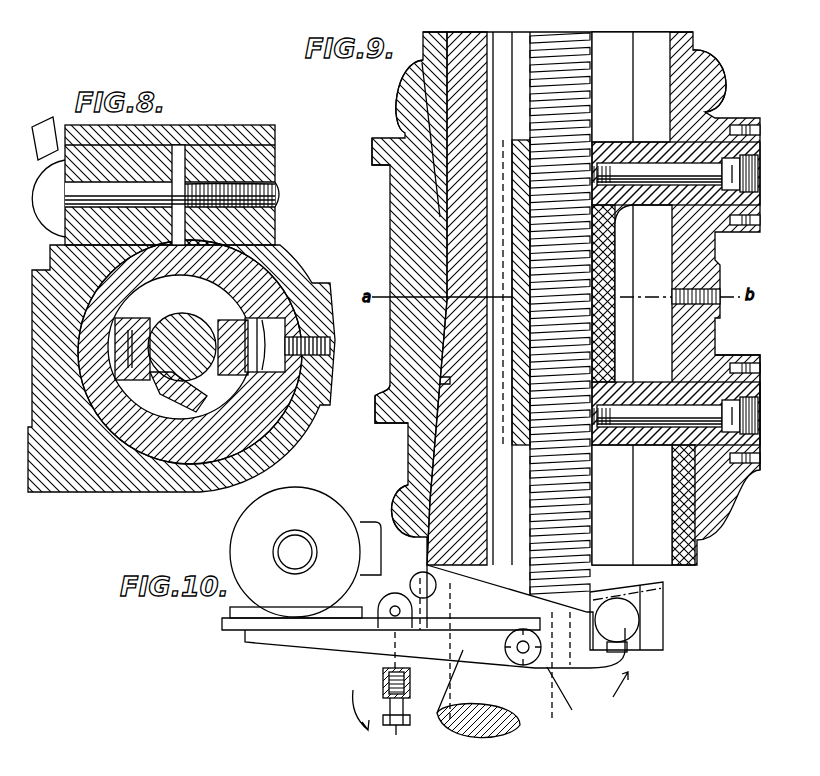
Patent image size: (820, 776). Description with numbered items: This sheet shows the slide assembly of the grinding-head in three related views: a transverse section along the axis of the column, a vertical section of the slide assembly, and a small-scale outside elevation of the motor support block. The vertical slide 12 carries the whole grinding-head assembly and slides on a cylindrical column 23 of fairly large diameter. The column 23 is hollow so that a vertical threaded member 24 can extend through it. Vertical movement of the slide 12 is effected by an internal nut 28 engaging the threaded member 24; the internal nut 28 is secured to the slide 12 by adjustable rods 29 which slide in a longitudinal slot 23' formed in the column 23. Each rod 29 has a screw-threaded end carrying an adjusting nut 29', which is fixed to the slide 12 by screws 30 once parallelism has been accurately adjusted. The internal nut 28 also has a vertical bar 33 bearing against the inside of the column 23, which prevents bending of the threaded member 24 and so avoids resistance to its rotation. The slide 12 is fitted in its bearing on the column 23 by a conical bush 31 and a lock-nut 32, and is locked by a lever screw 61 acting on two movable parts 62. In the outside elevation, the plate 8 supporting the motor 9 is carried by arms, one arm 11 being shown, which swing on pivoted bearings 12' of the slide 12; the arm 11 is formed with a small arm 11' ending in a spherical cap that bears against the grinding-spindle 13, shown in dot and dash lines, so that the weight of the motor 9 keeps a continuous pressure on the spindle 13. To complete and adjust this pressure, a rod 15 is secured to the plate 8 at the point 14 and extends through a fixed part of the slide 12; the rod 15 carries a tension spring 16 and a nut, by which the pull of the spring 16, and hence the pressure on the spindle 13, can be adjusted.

In FIG. 10, the plate 8 is at (320, 636).
In FIG. 10, the motor 9 is at (242, 549).
In FIG. 10, the arm 11 is at (492, 693).
In FIG. 10, the small arm 11' is at (557, 662).
In FIG. 8, the vertical slide 12 is at (181, 383).
In FIG. 9, the vertical slide 12 is at (531, 298).
In FIG. 10, the vertical slide 12 is at (501, 642).
In FIG. 10, the pivoted bearings 12' is at (515, 717).
In FIG. 10, the grinding-spindle 13 is at (632, 621).
In FIG. 10, the point 14 is at (396, 605).
In FIG. 10, the rod 15 is at (385, 690).
In FIG. 10, the tension spring 16 is at (404, 690).
In FIG. 8, the cylindrical column 23 is at (197, 352).
In FIG. 8, the longitudinal slot 23' is at (287, 345).
In FIG. 9, the longitudinal slot 23' is at (676, 300).
In FIG. 8, the vertical threaded member 24 is at (178, 393).
In FIG. 9, the vertical threaded member 24 is at (585, 495).
In FIG. 8, the internal nut 28 is at (205, 318).
In FIG. 9, the internal nut 28 is at (608, 272).
In FIG. 9, the adjustable rods 29 is at (676, 310).
In FIG. 9, the adjusting nut 29' is at (737, 405).
In FIG. 9, the screws 30 is at (755, 468).
In FIG. 9, the conical bush 31 is at (440, 129).
In FIG. 9, the lock-nut 32 is at (430, 79).
In FIG. 8, the vertical bar 33 is at (130, 325).
In FIG. 9, the vertical bar 33 is at (505, 370).
In FIG. 8, the lever screw 61 is at (46, 125).
In FIG. 8, the movable parts 62 is at (202, 158).